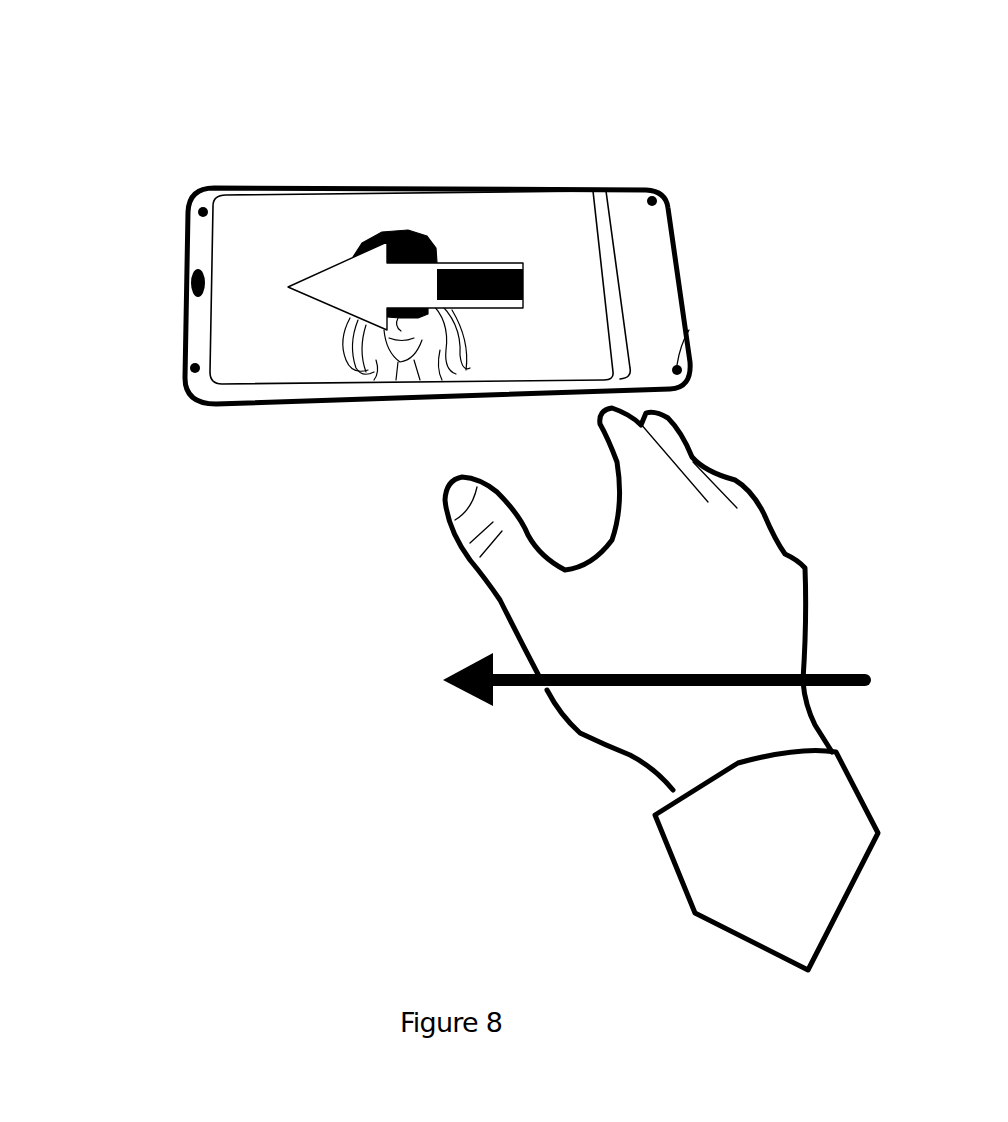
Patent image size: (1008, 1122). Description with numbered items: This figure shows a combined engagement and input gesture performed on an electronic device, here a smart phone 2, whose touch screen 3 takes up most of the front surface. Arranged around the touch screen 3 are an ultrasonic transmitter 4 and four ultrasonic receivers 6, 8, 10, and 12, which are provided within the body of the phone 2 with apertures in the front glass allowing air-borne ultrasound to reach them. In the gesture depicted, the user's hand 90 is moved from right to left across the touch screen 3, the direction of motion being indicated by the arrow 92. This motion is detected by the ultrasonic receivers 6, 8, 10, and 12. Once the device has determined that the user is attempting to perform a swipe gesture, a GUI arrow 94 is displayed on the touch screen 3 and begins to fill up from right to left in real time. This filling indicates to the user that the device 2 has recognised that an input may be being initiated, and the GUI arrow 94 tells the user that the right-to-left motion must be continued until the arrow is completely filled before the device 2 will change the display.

The smart phone 2 is at (505, 186).
The touch screen 3 is at (271, 370).
The ultrasonic transmitter 4 is at (190, 279).
The ultrasonic receiver 6 is at (186, 372).
The ultrasonic receiver 8 is at (196, 206).
The ultrasonic receiver 10 is at (690, 329).
The ultrasonic receiver 12 is at (660, 191).
The hand 90 is at (612, 740).
The arrow 92 is at (465, 700).
The GUI arrow 94 is at (333, 280).